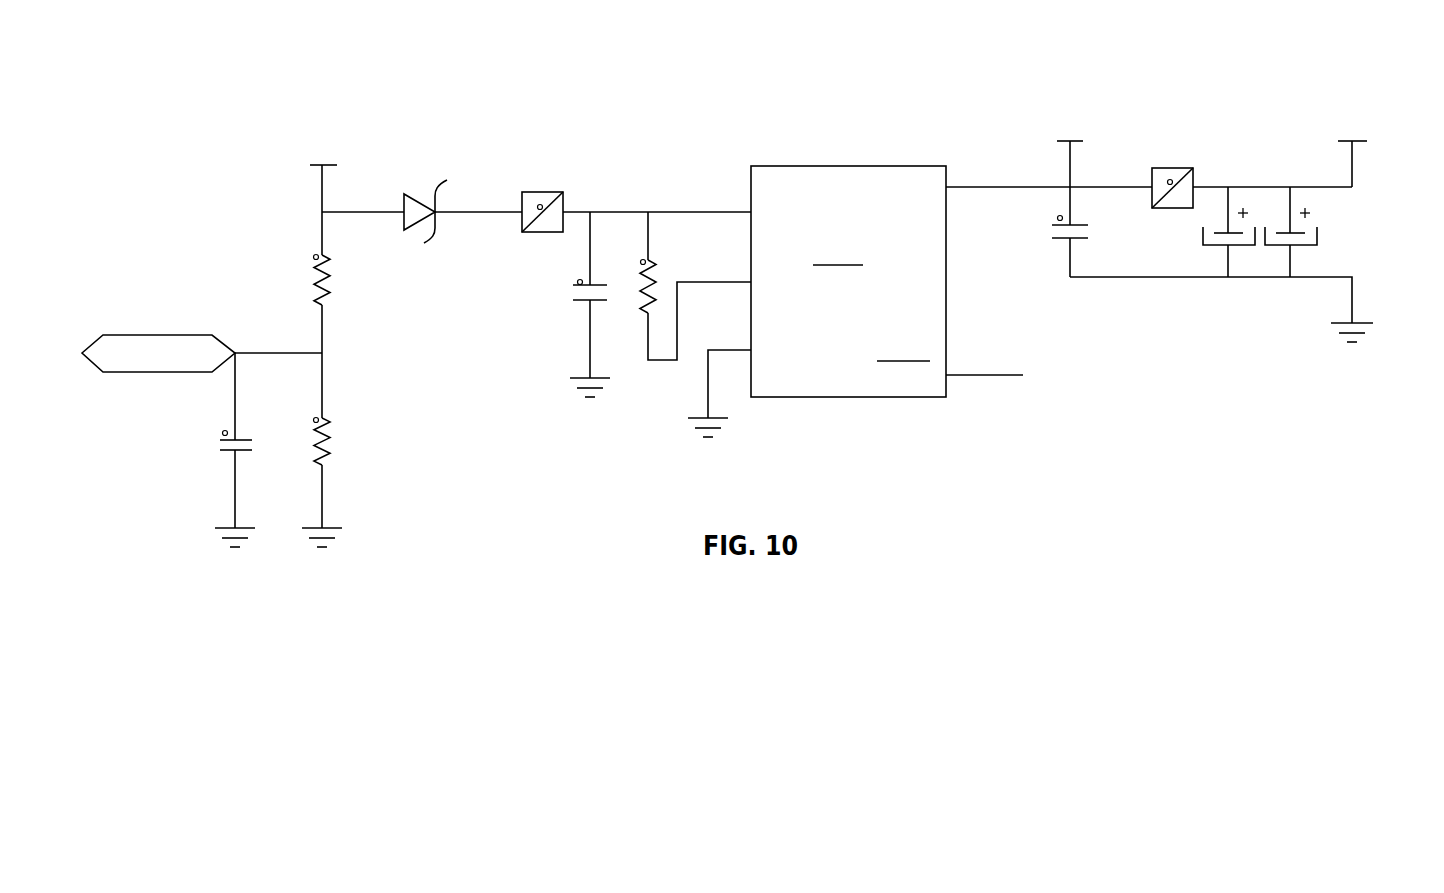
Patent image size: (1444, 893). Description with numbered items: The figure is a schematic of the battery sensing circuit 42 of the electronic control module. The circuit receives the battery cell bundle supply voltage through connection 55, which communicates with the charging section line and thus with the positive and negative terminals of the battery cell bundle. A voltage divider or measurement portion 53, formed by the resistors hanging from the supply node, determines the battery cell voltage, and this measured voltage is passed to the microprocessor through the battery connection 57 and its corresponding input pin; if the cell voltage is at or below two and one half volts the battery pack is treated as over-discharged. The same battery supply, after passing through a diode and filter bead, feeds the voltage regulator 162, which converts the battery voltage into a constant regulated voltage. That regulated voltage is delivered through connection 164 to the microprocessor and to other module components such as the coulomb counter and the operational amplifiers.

The battery sensing circuit 42 is at (189, 75).
The connection 55 is at (322, 137).
The connection 57 is at (133, 333).
The voltage divider or measurement portion 53 is at (410, 432).
The voltage regulator 162 is at (878, 165).
The connection 164 is at (1353, 115).